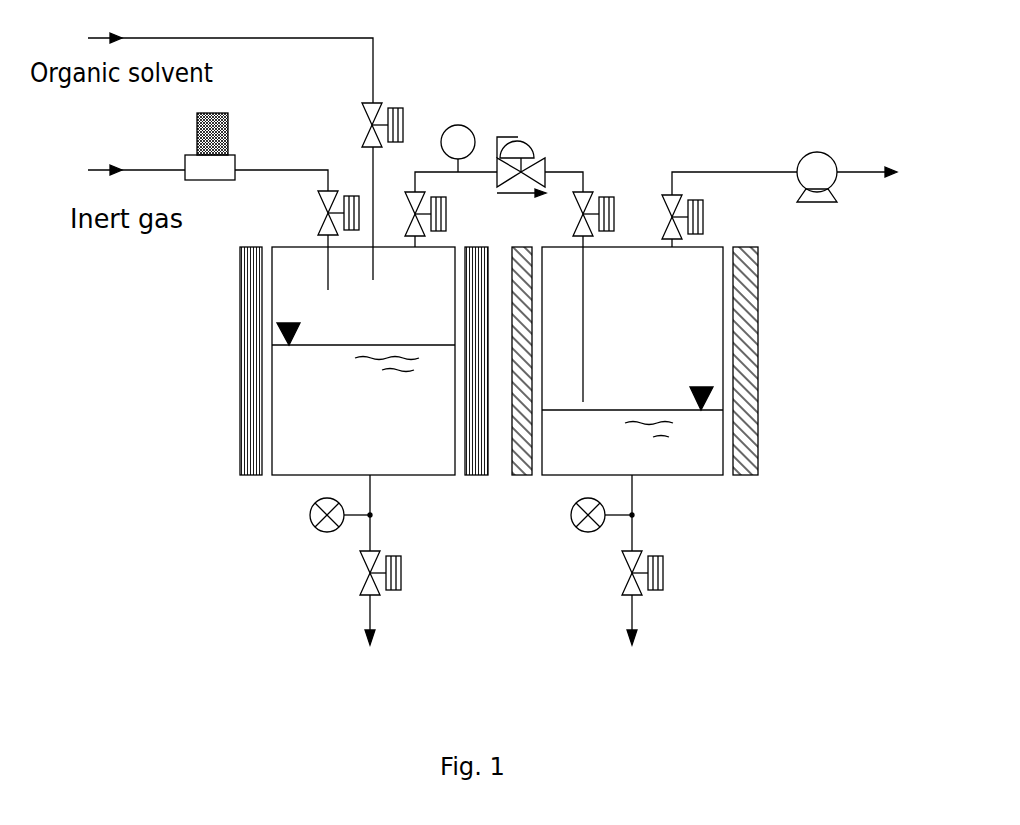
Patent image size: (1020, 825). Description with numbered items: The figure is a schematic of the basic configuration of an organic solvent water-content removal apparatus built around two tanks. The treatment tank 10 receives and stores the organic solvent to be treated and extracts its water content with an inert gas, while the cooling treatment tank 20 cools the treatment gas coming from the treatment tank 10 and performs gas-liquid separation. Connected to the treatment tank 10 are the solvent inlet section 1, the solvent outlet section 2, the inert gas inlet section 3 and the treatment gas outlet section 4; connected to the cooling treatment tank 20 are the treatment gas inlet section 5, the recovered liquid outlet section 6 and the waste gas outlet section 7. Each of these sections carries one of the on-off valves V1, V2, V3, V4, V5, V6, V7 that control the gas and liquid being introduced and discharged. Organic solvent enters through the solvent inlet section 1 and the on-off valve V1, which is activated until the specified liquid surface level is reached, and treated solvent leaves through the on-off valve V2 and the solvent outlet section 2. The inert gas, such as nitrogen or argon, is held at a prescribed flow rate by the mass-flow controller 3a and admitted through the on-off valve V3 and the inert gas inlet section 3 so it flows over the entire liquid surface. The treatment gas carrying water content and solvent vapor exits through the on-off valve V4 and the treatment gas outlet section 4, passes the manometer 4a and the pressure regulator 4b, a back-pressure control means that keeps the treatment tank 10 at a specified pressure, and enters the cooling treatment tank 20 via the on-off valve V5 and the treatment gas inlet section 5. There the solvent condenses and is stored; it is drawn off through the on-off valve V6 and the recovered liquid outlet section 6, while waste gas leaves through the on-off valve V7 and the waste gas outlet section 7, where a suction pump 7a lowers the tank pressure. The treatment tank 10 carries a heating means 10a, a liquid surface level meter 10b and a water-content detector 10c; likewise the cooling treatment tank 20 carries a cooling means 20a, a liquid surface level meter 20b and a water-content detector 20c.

The solvent inlet section 1 is at (267, 40).
The solvent outlet section 2 is at (373, 502).
The inert gas inlet section 3 is at (277, 167).
The mass-flow controller 3a is at (213, 115).
The treatment gas outlet section 4 is at (435, 170).
The manometer 4a is at (468, 128).
The pressure regulator 4b is at (530, 147).
The treatment gas inlet section 5 is at (570, 168).
The recovered liquid outlet section 6 is at (633, 502).
The waste gas outlet section 7 is at (720, 170).
The suction pump 7a is at (826, 153).
The treatment tank 10 is at (298, 475).
The heating means 10a is at (242, 363).
The liquid surface level meter 10b is at (302, 324).
The water-content detector 10c is at (318, 533).
The cooling treatment tank 20 is at (683, 475).
The cooling means 20a is at (758, 360).
The liquid surface level meter 20b is at (699, 387).
The water-content detector 20c is at (581, 533).
The on-off valve V1 is at (405, 107).
The on-off valve V2 is at (402, 575).
The on-off valve V3 is at (320, 222).
The on-off valve V4 is at (447, 220).
The on-off valve V5 is at (615, 216).
The on-off valve V6 is at (663, 575).
The on-off valve V7 is at (705, 217).